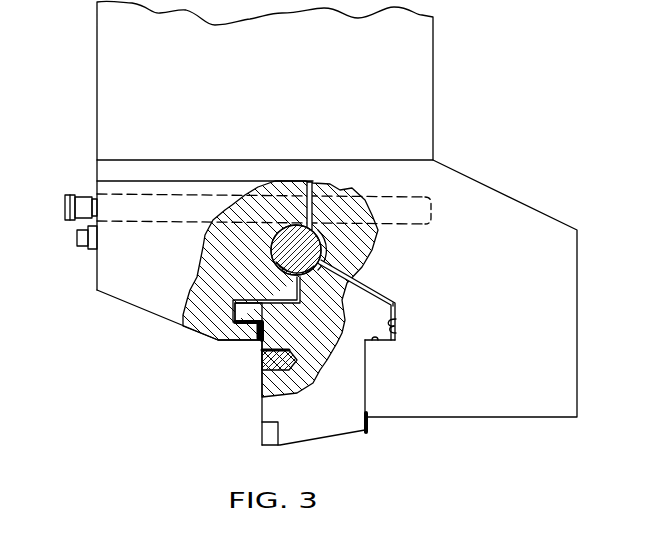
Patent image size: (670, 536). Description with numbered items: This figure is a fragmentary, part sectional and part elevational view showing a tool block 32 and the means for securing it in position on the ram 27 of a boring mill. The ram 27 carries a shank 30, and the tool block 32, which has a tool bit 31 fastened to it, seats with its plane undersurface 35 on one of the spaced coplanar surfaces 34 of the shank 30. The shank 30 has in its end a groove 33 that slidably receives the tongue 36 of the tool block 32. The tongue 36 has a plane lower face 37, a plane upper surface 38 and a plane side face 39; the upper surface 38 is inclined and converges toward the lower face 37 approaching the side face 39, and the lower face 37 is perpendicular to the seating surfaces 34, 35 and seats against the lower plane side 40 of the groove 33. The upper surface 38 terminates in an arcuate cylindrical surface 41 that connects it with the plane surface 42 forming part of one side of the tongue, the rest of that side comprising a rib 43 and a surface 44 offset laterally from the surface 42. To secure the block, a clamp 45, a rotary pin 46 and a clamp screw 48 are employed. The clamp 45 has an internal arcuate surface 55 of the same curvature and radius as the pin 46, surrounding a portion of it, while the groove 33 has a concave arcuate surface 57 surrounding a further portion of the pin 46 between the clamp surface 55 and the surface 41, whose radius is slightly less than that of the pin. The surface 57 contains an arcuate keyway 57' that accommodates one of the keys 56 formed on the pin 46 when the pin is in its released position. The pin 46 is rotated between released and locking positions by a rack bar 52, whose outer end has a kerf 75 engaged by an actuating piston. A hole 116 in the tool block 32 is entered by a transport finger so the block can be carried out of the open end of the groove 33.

The ram 27 is at (425, 105).
The shank 30 is at (578, 388).
The tool bit 31 is at (262, 433).
The tool block 32 is at (332, 430).
The groove 33 is at (373, 296).
The coplanar surface 34 is at (366, 391).
The undersurface 35 is at (370, 412).
The tongue 36 is at (398, 318).
The lower face 37 is at (395, 342).
The upper surface 38 is at (388, 300).
The side face 39 is at (400, 329).
The lower plane side 40 is at (376, 342).
The arcuate cylindrical surface 41 is at (285, 279).
The plane surface 42 is at (292, 300).
The rib 43 is at (243, 336).
The surface 44 is at (258, 350).
The clamp 45 is at (105, 286).
The rotary pin 46 is at (278, 252).
The clamp screw 48 is at (77, 241).
The rack bar 52 is at (397, 197).
The internal arcuate surface 55 is at (294, 230).
The key 56 is at (343, 250).
The concave arcuate surface 57 is at (405, 211).
The arcuate keyway 57' is at (331, 194).
The kerf 75 is at (68, 196).
The hole 116 is at (268, 366).